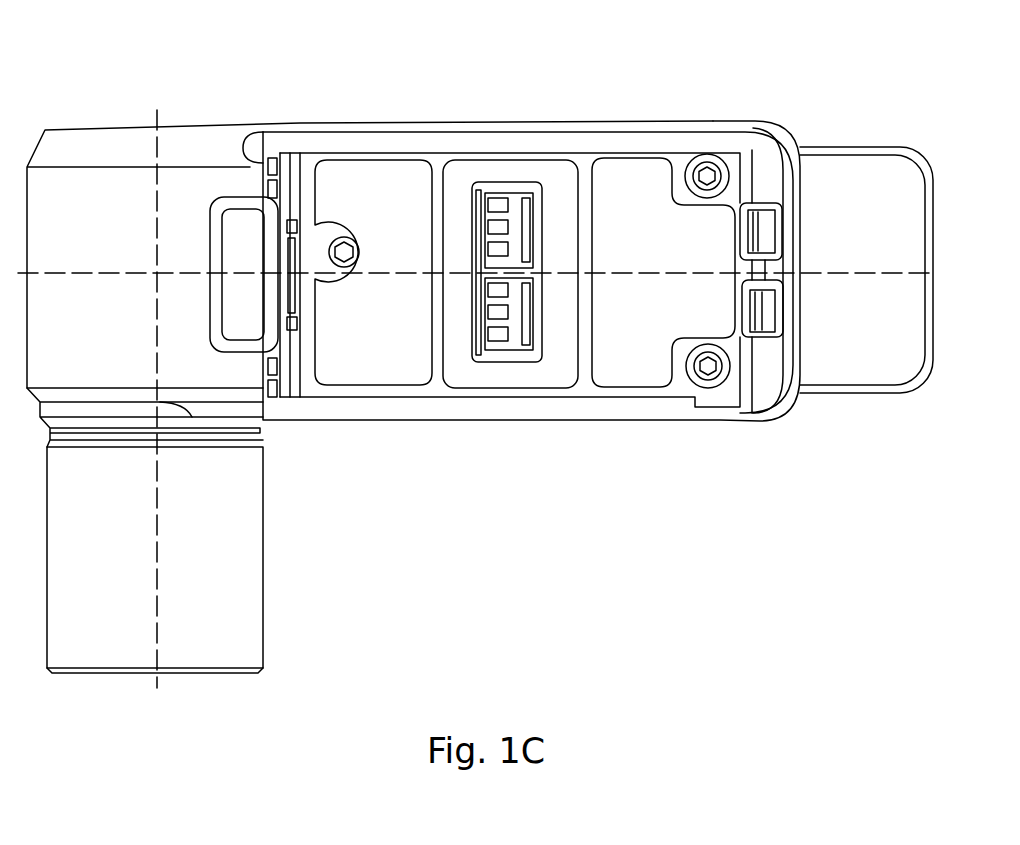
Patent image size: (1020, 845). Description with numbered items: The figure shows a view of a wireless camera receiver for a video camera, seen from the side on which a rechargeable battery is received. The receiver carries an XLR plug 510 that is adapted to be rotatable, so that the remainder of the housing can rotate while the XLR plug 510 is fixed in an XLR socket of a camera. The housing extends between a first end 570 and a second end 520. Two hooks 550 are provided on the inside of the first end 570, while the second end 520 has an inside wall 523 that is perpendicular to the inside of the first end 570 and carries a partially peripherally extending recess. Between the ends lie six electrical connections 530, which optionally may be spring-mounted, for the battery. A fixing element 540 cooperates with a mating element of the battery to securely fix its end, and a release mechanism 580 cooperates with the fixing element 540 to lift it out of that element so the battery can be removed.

The XLR plug 510 is at (155, 560).
The second end 520 is at (370, 284).
The inside wall 523 is at (257, 163).
The electrical connection 530 is at (525, 322).
The fixing element 540 is at (305, 322).
The hook 550 is at (768, 327).
The first end 570 is at (866, 270).
The release mechanism 580 is at (237, 237).